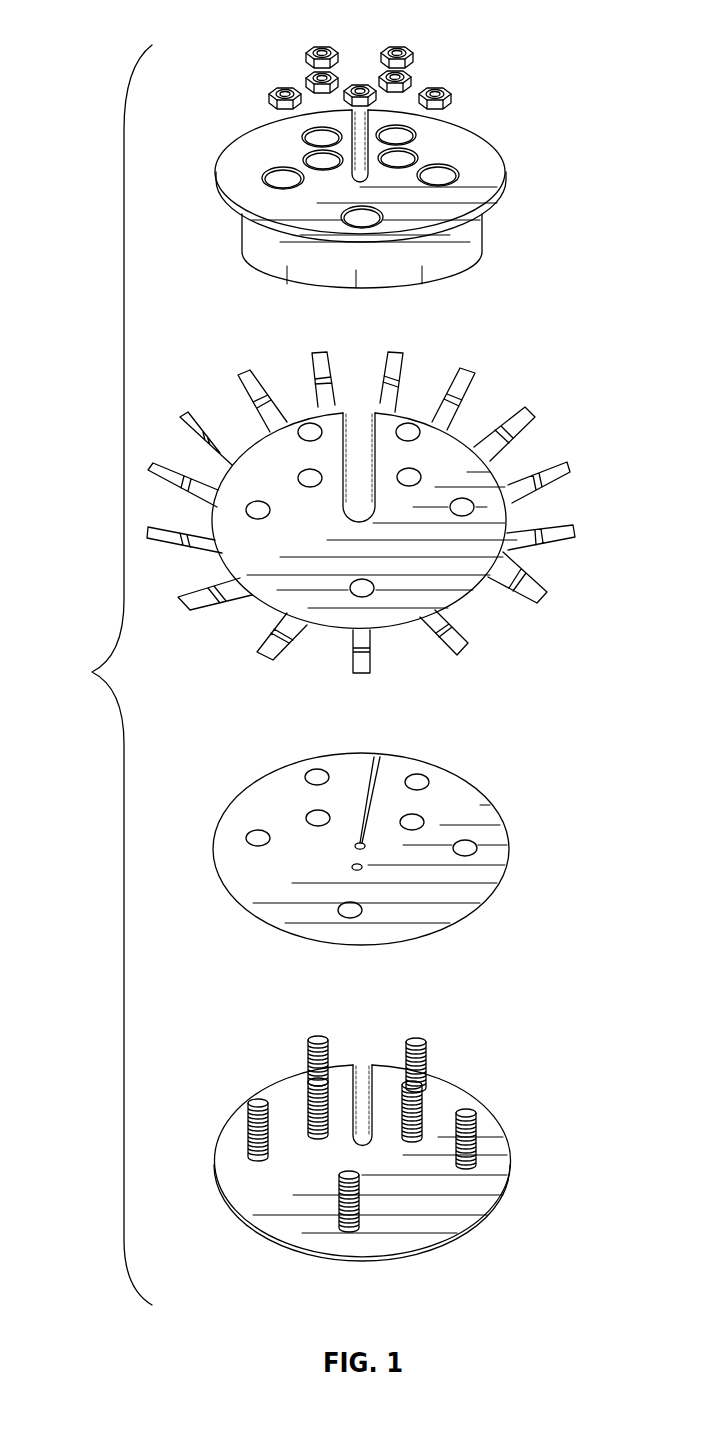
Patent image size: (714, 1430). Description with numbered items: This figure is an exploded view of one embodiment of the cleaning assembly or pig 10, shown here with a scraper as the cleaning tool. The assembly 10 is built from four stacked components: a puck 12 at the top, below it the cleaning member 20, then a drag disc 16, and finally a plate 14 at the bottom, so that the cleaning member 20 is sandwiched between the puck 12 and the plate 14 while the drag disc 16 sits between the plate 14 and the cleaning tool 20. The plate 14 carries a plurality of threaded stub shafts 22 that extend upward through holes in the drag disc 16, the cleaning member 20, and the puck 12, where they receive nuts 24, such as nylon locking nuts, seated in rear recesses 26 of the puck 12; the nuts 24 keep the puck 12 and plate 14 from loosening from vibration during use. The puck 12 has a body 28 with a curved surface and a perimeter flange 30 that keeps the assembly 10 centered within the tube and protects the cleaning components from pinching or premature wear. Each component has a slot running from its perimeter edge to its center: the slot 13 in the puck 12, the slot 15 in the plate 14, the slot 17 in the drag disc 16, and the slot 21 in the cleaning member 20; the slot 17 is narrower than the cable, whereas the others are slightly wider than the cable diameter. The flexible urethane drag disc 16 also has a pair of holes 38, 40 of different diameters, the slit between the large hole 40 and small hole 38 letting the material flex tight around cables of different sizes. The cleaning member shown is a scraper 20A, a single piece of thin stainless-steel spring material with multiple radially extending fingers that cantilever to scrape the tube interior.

The cleaning assembly 10 is at (99, 675).
The puck 12 is at (507, 195).
The slot 13 is at (360, 106).
The plate 14 is at (510, 1158).
The slot 15 is at (363, 1090).
The drag disc 16 is at (508, 849).
The slot 17 is at (380, 760).
The cleaning member 20 is at (514, 378).
The scraper 20A is at (508, 556).
The slot 21 is at (366, 410).
The threaded stub shafts 22 is at (339, 1208).
The nuts 24 is at (451, 98).
The rear recesses 26 is at (282, 178).
The body 28 is at (474, 246).
The perimeter flange 30 is at (496, 212).
The small hole 38 is at (363, 867).
The large hole 40 is at (355, 846).